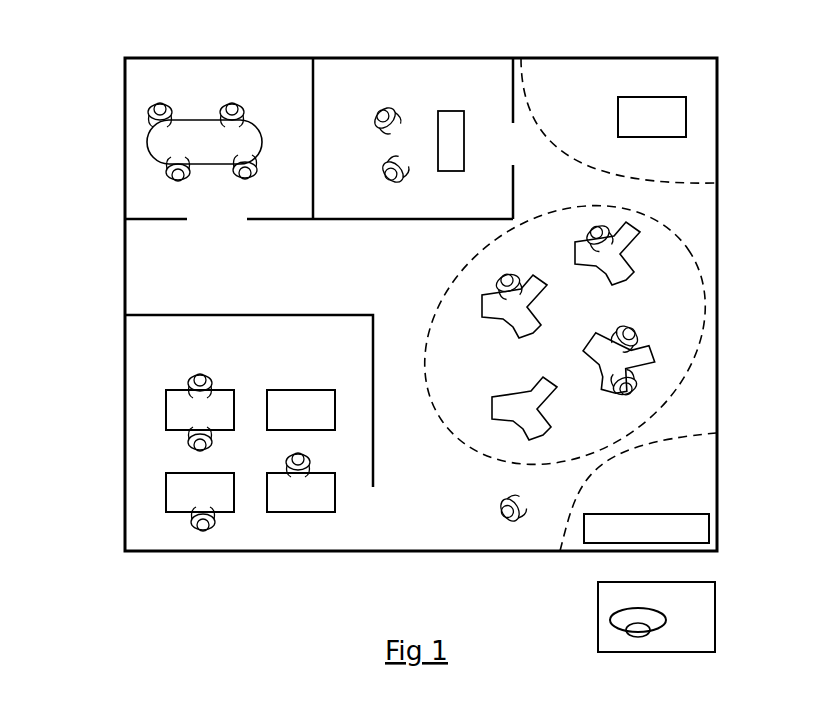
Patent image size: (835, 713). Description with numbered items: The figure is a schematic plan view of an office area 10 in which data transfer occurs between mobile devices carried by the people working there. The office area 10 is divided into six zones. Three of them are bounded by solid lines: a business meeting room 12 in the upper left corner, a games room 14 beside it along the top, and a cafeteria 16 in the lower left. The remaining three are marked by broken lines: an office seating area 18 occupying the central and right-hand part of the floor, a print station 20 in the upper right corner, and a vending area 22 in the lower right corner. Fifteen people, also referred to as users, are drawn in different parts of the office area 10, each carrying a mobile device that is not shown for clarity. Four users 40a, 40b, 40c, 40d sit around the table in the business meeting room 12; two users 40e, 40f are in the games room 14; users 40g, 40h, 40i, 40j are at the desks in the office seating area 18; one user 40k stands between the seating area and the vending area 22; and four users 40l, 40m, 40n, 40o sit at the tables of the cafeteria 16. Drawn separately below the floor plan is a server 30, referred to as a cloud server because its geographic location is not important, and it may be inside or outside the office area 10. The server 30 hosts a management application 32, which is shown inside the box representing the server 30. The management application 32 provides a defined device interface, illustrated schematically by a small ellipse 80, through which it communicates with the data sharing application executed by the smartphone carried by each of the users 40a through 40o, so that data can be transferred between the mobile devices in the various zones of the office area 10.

The office area 10 is at (62, 543).
The business meeting room 12 is at (140, 193).
The games room 14 is at (328, 92).
The cafeteria 16 is at (137, 443).
The office seating area 18 is at (440, 310).
The print station 20 is at (702, 138).
The vending area 22 is at (706, 472).
The server 30 is at (718, 592).
The management application 32 is at (612, 612).
The ellipse 80 is at (648, 638).
The person 40a is at (145, 112).
The person 40b is at (245, 105).
The person 40c is at (240, 185).
The person 40d is at (192, 190).
The person 40e is at (368, 128).
The person 40f is at (405, 182).
The person 40g is at (590, 222).
The person 40h is at (495, 275).
The person 40i is at (633, 328).
The person 40j is at (640, 382).
The person 40k is at (500, 505).
The person 40l is at (190, 535).
The person 40m is at (320, 458).
The person 40n is at (215, 375).
The person 40o is at (180, 440).